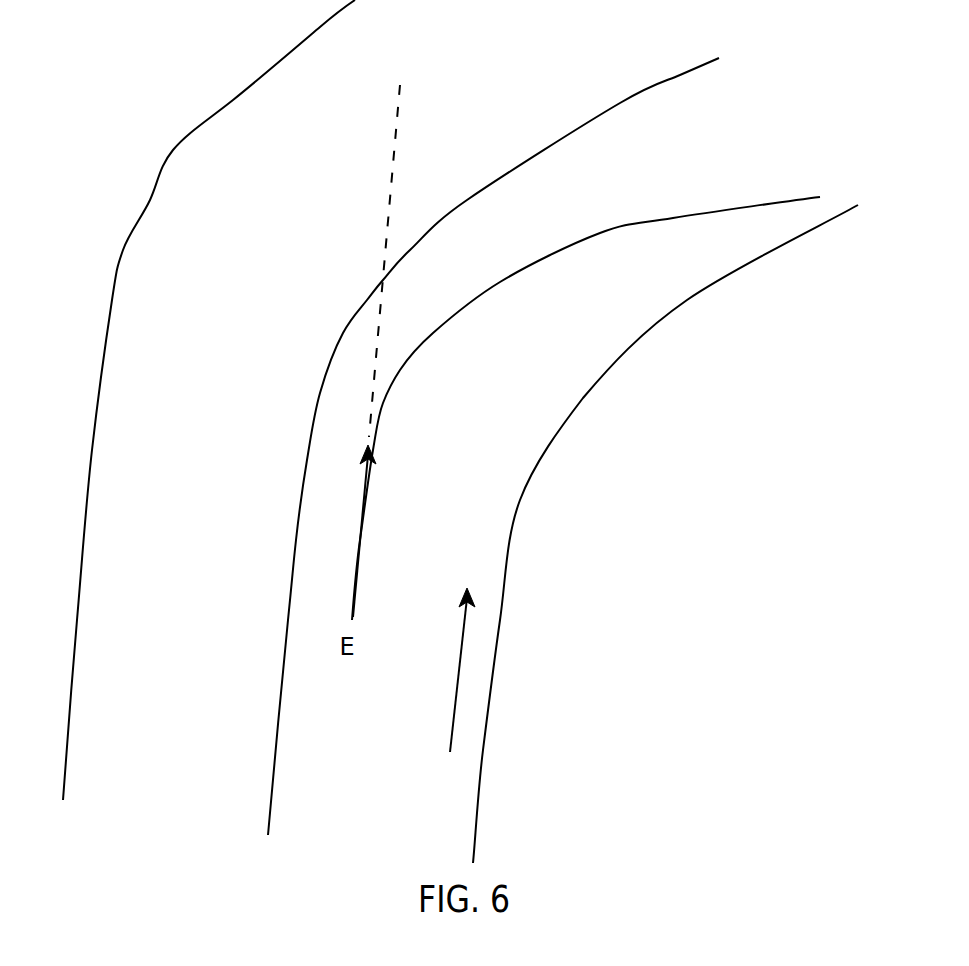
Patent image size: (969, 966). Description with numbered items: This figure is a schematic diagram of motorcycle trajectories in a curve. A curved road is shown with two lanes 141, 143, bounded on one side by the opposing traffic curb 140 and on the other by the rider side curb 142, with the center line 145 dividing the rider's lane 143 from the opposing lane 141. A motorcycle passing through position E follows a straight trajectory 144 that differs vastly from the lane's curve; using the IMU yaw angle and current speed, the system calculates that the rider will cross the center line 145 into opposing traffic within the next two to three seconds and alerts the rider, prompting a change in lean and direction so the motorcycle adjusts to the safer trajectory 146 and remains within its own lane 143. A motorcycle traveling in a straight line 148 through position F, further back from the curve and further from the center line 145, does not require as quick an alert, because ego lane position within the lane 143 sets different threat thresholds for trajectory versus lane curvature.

The opposing traffic curb 140 is at (150, 200).
The lane 141 is at (194, 791).
The rider side curb 142 is at (583, 398).
The lane 143 is at (348, 809).
The straight trajectory 144 is at (395, 155).
The center line 145 is at (680, 75).
The safer trajectory 146 is at (673, 218).
The straight line 148 is at (465, 642).